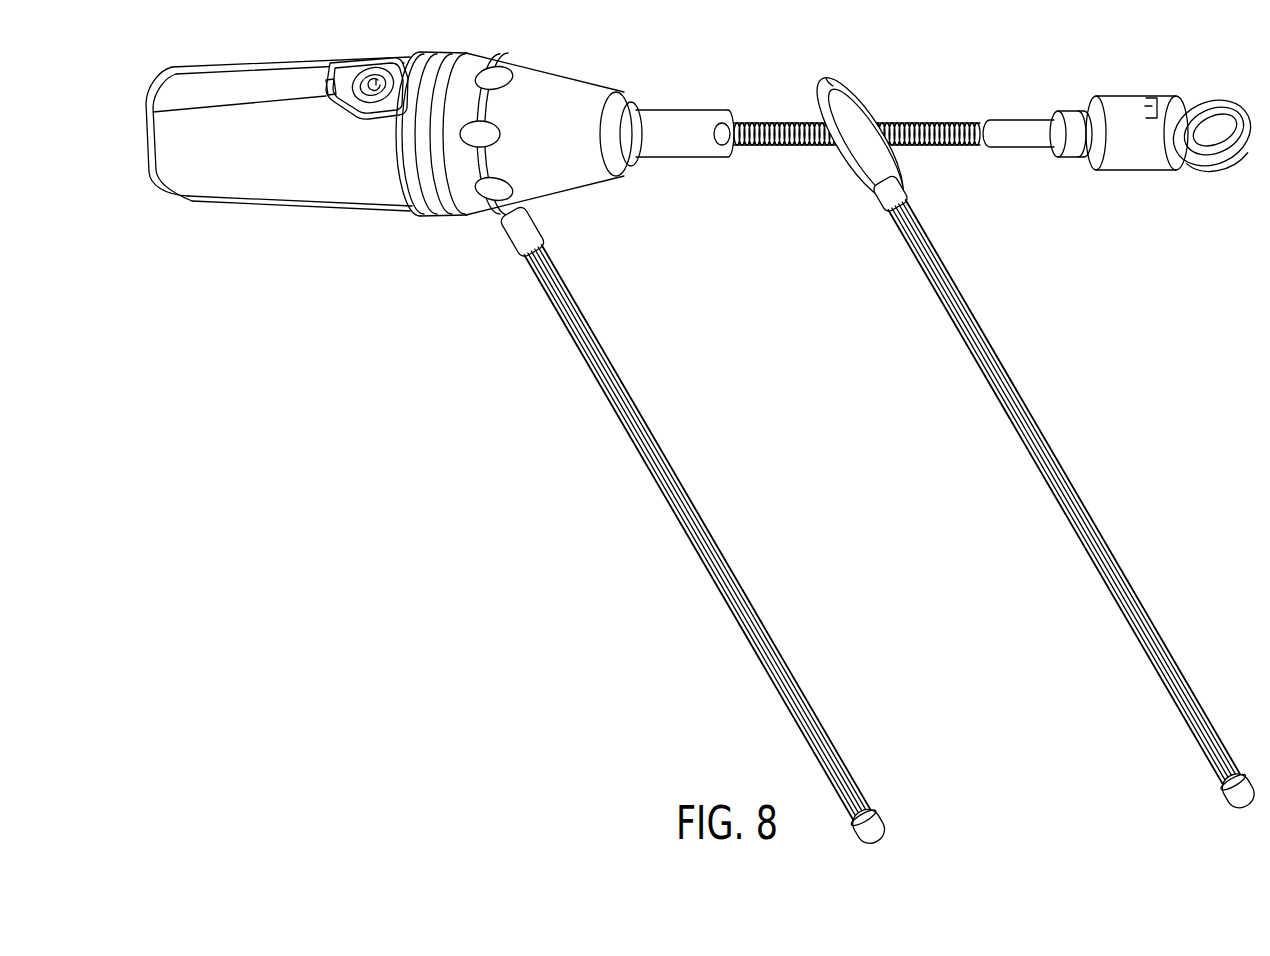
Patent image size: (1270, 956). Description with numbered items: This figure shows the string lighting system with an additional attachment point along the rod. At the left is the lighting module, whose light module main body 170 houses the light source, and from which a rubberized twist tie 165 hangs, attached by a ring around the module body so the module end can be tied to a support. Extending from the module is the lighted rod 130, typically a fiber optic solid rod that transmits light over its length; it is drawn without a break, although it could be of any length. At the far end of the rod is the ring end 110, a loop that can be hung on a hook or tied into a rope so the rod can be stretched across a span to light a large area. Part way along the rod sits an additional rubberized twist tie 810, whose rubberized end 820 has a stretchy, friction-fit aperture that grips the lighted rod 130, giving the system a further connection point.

The ring end 110 is at (1223, 104).
The lighted rod 130 is at (764, 120).
The rubberized twist tie 165 is at (660, 446).
The light module main body 170 is at (293, 178).
The rubberized twist tie 810 is at (1023, 394).
The rubberized end 820 is at (852, 90).